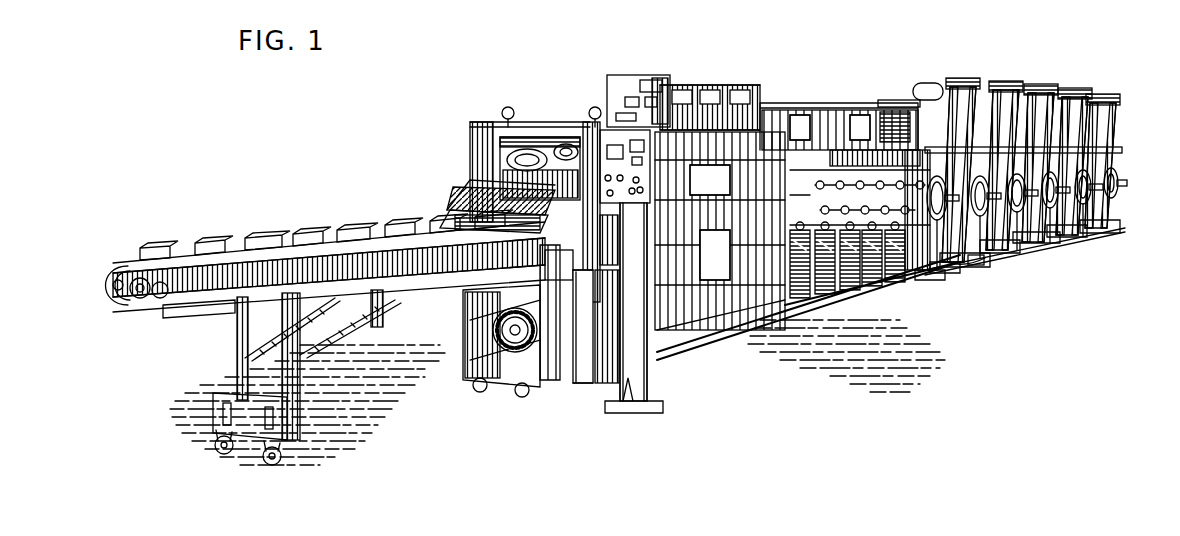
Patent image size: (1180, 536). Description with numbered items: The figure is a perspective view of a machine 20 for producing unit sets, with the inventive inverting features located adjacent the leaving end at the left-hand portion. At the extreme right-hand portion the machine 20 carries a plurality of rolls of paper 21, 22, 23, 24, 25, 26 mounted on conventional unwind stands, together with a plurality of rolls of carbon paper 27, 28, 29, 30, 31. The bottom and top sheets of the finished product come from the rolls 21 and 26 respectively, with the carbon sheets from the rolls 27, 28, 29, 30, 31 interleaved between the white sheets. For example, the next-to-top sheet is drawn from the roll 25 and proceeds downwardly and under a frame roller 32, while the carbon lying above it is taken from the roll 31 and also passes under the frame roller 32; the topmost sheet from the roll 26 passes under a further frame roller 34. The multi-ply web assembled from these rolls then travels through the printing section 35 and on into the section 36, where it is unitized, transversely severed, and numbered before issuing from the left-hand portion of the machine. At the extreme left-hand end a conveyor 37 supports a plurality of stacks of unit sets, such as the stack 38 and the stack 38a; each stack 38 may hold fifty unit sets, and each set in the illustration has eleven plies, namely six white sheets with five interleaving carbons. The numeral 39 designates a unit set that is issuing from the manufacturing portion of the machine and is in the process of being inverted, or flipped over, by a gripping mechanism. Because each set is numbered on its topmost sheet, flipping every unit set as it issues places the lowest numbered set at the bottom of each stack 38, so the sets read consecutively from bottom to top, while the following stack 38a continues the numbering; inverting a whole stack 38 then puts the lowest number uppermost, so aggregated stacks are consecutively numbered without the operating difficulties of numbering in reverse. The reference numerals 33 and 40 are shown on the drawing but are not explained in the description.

The machine 20 is at (829, 101).
The roll of paper 21 is at (1104, 198).
The roll of paper 22 is at (1087, 238).
The roll of paper 23 is at (1044, 243).
The roll of paper 24 is at (1010, 253).
The roll of paper 25 is at (971, 257).
The roll of paper 26 is at (940, 266).
The roll of carbon paper 27 is at (1108, 105).
The roll of carbon paper 28 is at (1083, 100).
The roll of carbon paper 29 is at (1055, 98).
The roll of carbon paper 30 is at (1020, 100).
The roll of carbon paper 31 is at (985, 95).
The frame roller 32 is at (977, 268).
The drive connection 33 is at (953, 271).
The frame roller 34 is at (928, 278).
The printing section 35 is at (874, 110).
The unitizing, severing and numbering section 36 is at (746, 90).
The conveyor 37 is at (121, 258).
The stack of unit sets 38 is at (168, 250).
The stack of unit sets 38a is at (214, 247).
The unit set 39 is at (527, 157).
The cutting roller 40 is at (567, 150).